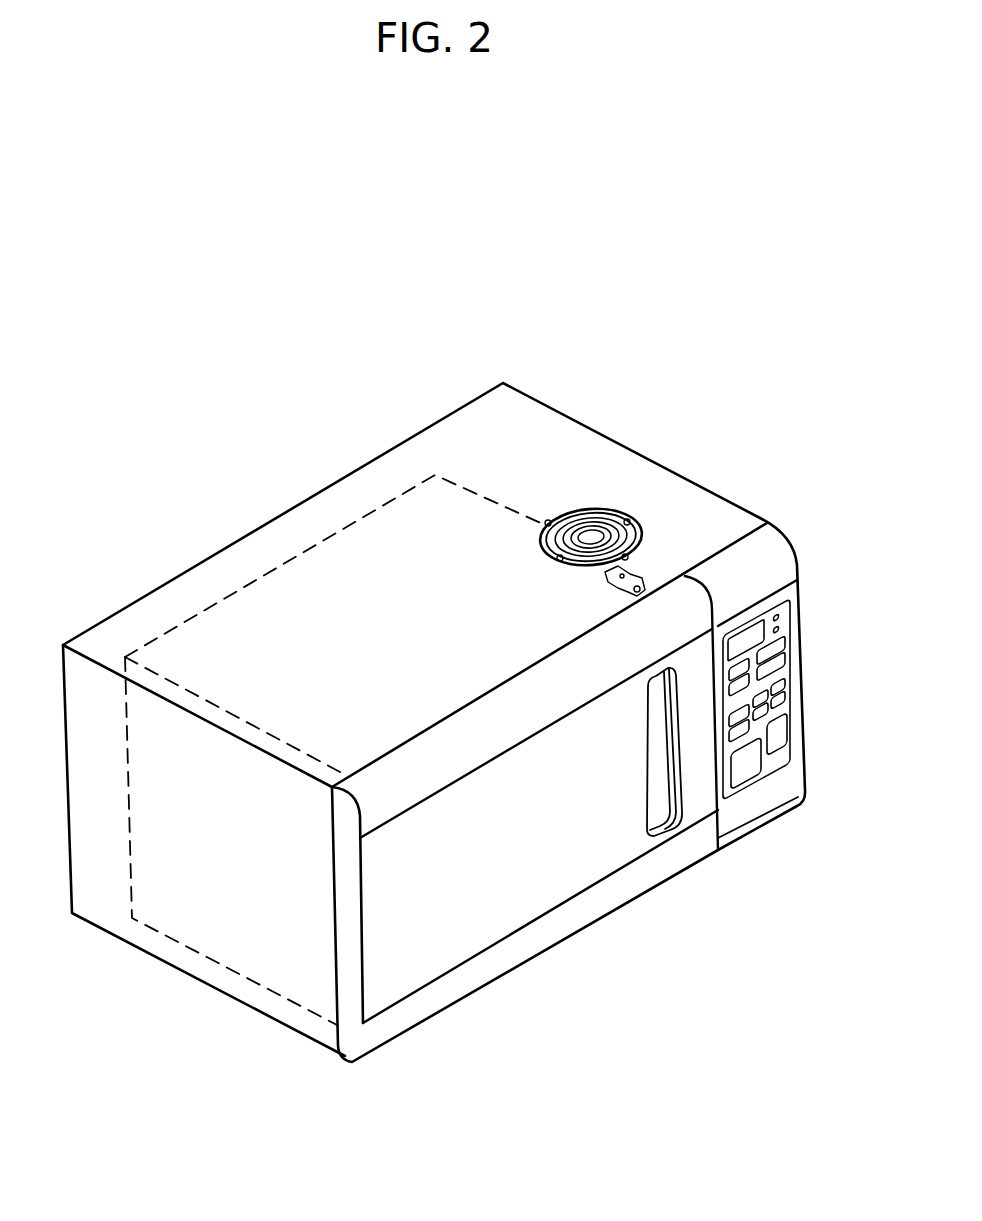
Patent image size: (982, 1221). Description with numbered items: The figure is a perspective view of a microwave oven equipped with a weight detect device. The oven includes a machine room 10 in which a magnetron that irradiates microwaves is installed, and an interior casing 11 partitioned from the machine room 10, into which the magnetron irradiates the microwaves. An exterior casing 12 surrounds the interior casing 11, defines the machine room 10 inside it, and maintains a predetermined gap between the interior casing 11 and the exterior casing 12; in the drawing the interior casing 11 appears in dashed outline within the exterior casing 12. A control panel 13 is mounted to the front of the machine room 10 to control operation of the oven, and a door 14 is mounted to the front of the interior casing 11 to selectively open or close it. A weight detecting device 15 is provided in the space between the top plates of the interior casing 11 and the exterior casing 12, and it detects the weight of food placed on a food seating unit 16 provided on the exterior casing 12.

The machine room 10 is at (757, 577).
The interior casing 11 is at (365, 517).
The exterior casing 12 is at (232, 578).
The control panel 13 is at (783, 682).
The door 14 is at (515, 890).
The weight detecting device 15 is at (637, 575).
The food seating unit 16 is at (610, 508).